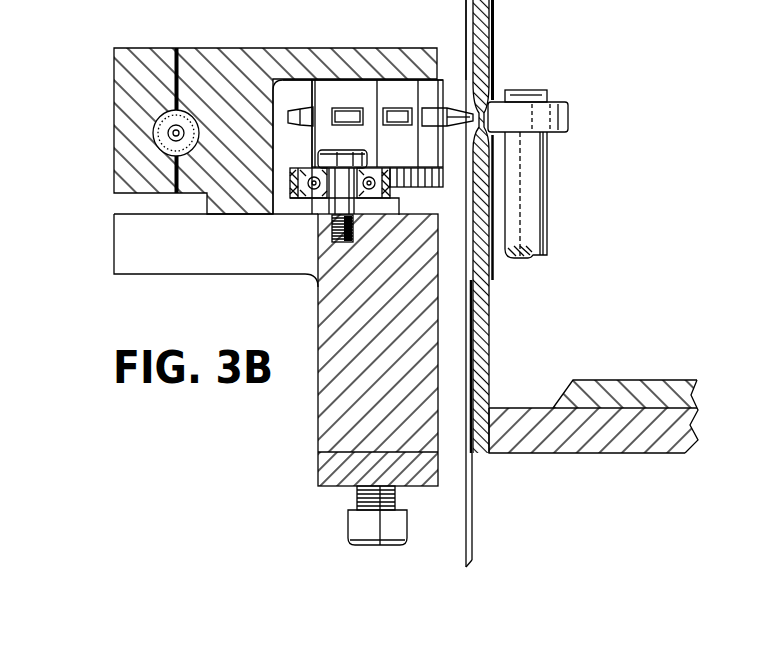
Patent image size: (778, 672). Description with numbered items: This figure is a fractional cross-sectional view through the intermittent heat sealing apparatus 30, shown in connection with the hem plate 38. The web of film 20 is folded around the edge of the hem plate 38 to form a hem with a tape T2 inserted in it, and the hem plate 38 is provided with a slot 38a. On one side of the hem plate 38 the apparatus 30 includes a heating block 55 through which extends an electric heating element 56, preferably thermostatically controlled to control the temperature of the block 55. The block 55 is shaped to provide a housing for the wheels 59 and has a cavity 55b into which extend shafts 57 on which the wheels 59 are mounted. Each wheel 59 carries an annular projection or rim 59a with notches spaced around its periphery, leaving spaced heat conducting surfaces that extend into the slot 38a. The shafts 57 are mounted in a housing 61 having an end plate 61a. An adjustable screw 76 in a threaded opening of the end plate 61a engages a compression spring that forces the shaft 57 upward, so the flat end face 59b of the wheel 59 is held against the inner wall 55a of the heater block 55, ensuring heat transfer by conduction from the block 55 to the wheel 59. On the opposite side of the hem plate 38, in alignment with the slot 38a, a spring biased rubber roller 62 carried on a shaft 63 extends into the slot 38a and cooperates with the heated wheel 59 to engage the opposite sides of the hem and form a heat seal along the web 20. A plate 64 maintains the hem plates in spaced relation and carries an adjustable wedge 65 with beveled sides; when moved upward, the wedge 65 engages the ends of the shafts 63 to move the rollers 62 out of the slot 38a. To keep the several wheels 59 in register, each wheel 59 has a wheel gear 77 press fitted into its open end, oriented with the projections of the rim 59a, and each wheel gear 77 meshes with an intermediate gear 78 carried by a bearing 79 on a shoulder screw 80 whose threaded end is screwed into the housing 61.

The heat sealing apparatus 30 is at (257, 20).
The heating block 55 is at (213, 63).
The inner wall of heater block 55a is at (305, 78).
The cavity 55b is at (290, 93).
The electric heating element 56 is at (154, 136).
The shaft 57 is at (402, 202).
The wheel 59 is at (395, 88).
The annular projection or rim 59a is at (307, 118).
The flat end face 59b is at (362, 80).
The housing 61 is at (327, 316).
The end plate 61a is at (330, 478).
The rubber roller 62 is at (568, 116).
The shaft 63 is at (525, 165).
The plate 64 is at (589, 445).
The adjustable wedge 65 is at (590, 380).
The adjustable screw 76 is at (357, 528).
The wheel gear 77 is at (432, 188).
The intermediate gear 78 is at (292, 176).
The bearing 79 is at (312, 197).
The shoulder screw 80 is at (326, 218).
The hem plate 38 is at (495, 38).
The slot 38a is at (497, 72).
The web of film 20 is at (473, 475).
The tape T2 is at (495, 13).